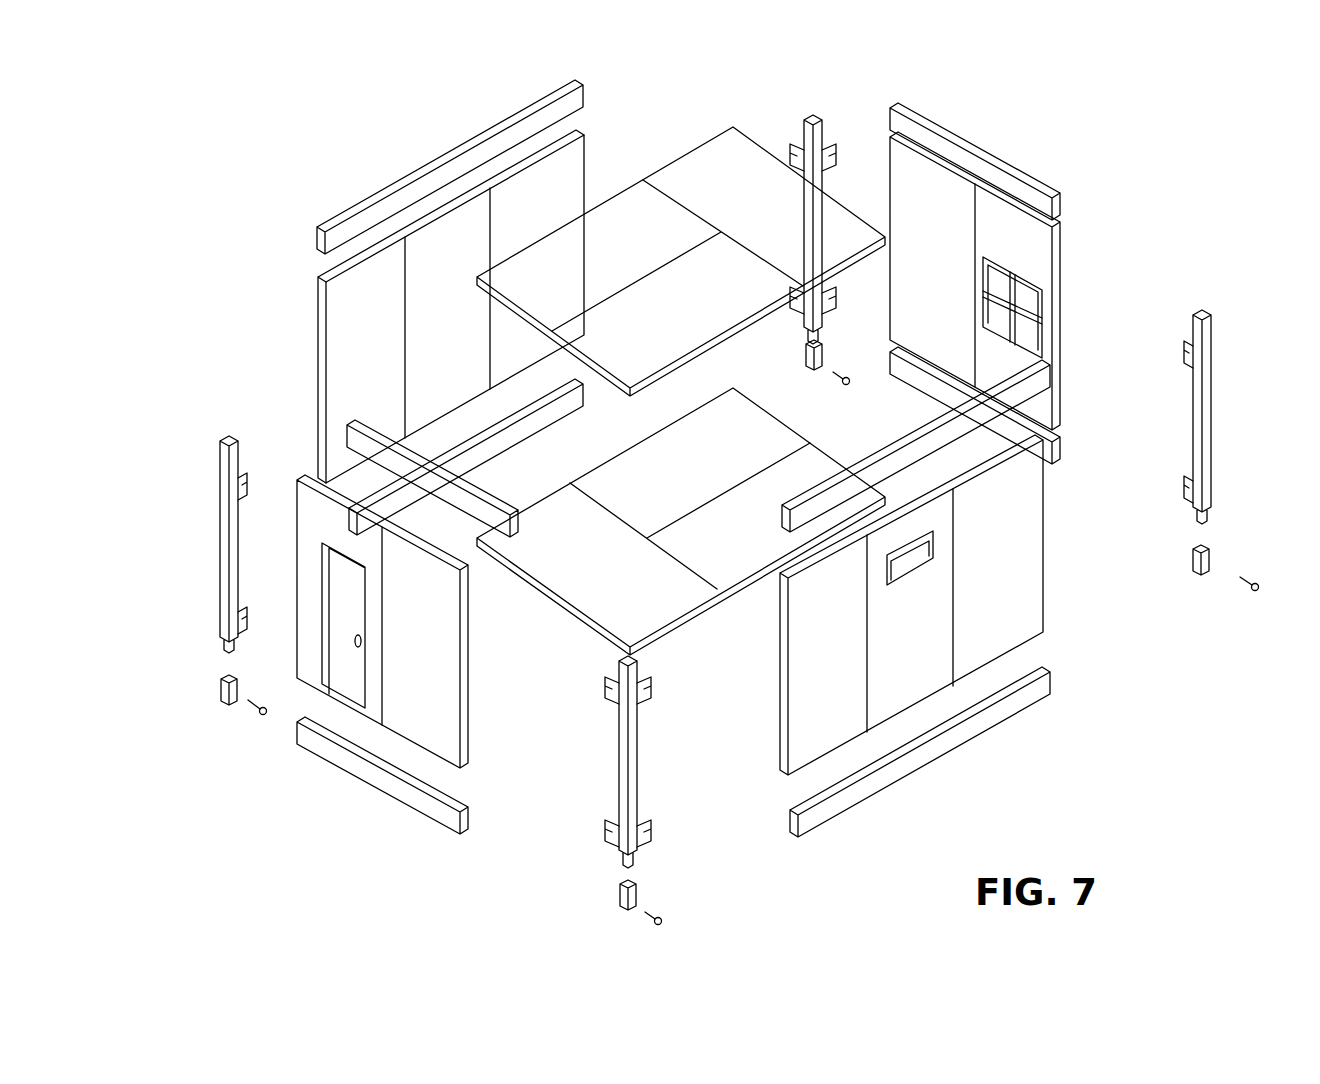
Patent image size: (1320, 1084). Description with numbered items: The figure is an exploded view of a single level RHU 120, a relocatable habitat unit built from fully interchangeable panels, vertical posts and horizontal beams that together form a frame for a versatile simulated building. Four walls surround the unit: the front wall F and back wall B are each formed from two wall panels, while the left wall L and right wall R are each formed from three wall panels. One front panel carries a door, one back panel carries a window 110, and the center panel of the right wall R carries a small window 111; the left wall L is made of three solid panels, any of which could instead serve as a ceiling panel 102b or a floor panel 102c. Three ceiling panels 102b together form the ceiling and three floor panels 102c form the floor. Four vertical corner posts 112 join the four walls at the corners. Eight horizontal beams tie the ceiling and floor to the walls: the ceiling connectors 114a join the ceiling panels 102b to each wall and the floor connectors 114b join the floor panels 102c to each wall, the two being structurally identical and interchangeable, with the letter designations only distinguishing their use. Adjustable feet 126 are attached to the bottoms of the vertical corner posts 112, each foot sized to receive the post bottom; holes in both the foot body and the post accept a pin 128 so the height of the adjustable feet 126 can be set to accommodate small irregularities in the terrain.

The single level RHU 120 is at (222, 192).
The ceiling panel 102b is at (700, 170).
The floor panel 102c is at (653, 604).
The window 110 is at (1028, 298).
The small window 111 is at (917, 550).
The vertical corner post 112 is at (1193, 330).
The ceiling connector 114a is at (472, 133).
The floor connector 114b is at (905, 763).
The adjustable feet 126 is at (637, 893).
The pin 128 is at (655, 918).
The left wall L is at (218, 340).
The back wall B is at (1017, 140).
The right wall R is at (1048, 718).
The front wall F is at (300, 793).